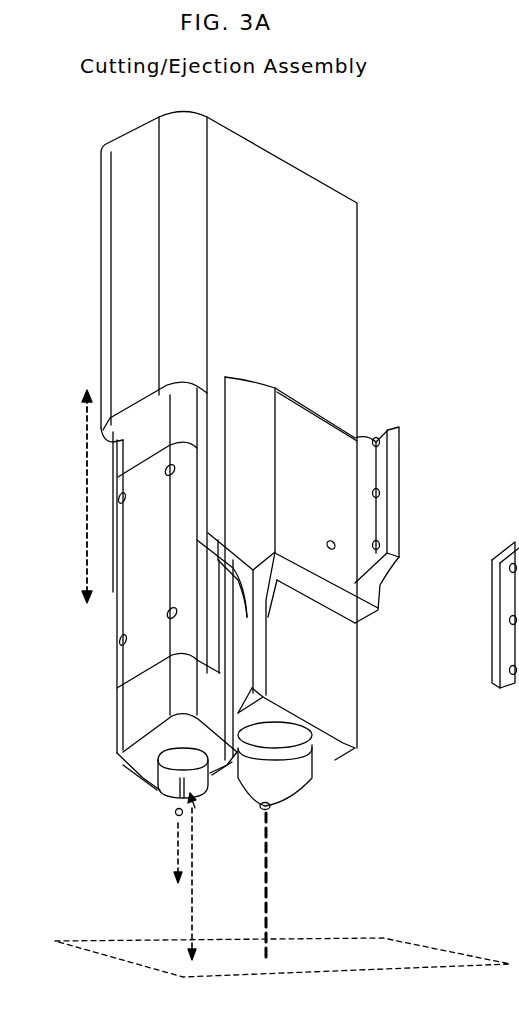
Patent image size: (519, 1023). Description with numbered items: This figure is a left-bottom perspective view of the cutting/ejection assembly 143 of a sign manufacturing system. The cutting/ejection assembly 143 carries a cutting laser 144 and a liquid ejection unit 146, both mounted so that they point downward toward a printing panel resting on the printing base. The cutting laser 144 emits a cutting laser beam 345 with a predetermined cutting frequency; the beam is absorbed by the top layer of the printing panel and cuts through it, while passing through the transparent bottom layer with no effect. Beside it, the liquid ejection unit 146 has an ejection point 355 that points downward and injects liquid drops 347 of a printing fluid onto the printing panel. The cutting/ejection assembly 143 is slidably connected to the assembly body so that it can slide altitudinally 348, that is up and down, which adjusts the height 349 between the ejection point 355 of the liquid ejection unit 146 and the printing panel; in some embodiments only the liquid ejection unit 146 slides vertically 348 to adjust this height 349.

The cutting/ejection assembly 143 is at (332, 164).
The liquid ejection unit 146 is at (116, 733).
The cutting laser 144 is at (313, 780).
The ejection point 355 is at (180, 795).
The liquid drops of printing fluid 347 is at (173, 813).
The altitudinal sliding direction 348 is at (82, 510).
The height 349 is at (188, 912).
The cutting laser beam 345 is at (273, 873).